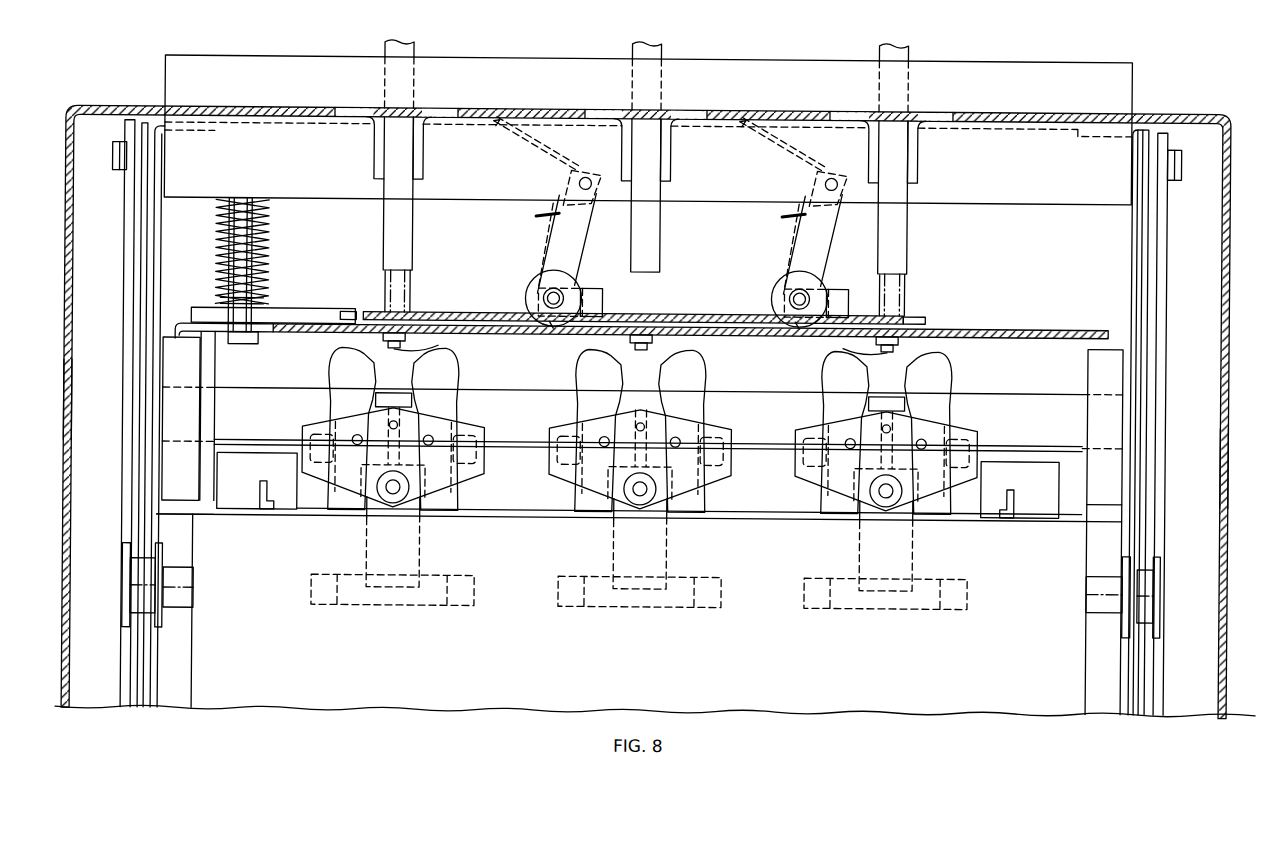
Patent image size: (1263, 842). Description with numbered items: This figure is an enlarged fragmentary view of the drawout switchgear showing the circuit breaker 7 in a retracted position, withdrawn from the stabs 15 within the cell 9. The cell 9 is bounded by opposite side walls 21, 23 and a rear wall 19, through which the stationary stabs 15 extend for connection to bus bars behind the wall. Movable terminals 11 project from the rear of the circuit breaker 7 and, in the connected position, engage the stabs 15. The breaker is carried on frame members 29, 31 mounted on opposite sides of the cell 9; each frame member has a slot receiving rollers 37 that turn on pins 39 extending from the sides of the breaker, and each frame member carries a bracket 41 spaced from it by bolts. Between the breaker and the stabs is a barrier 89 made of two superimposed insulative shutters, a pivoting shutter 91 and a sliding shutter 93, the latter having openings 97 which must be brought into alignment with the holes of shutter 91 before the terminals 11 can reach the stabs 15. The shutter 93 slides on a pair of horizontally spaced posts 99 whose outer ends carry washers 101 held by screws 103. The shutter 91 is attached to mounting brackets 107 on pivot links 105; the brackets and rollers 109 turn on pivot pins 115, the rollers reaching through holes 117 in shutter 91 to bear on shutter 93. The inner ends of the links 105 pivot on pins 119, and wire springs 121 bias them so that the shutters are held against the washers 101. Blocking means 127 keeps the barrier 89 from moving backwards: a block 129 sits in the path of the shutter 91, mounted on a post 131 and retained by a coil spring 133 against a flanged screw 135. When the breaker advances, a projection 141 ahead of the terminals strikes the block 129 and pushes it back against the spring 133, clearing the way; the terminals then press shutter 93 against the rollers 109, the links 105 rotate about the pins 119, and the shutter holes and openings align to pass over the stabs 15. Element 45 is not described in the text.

The circuit breaker 7 is at (196, 686).
The cell 9 is at (70, 312).
The movable terminal 11 is at (452, 375).
The stab 15 is at (384, 240).
The rear wall 19 is at (541, 106).
The side wall 21 is at (71, 400).
The side wall 23 is at (1222, 454).
The frame member 29 is at (1133, 664).
The frame member 31 is at (160, 539).
The roller 37 is at (126, 556).
The pin 39 is at (176, 607).
The bracket 41 is at (125, 686).
The guide bar 45 is at (128, 643).
The barrier 89 is at (441, 300).
The shutter 91 is at (488, 310).
The shutter 93 is at (290, 332).
The opening 97 is at (384, 334).
The post 99 is at (387, 303).
The washer 101 is at (442, 344).
The screw 103 is at (395, 350).
The pivot link 105 is at (586, 237).
The mounting bracket 107 is at (590, 288).
The roller 109 is at (546, 250).
The pivot pin 115 is at (545, 294).
The hole 117 is at (556, 332).
The pivot pin 119 is at (586, 174).
The wire spring 121 is at (522, 142).
The means for preventing movement of the barrier 127 is at (270, 294).
The block 129 is at (321, 307).
The post 131 is at (230, 282).
The coil spring 133 is at (218, 241).
The flanged screw 135 is at (246, 343).
The projection 141 is at (195, 322).